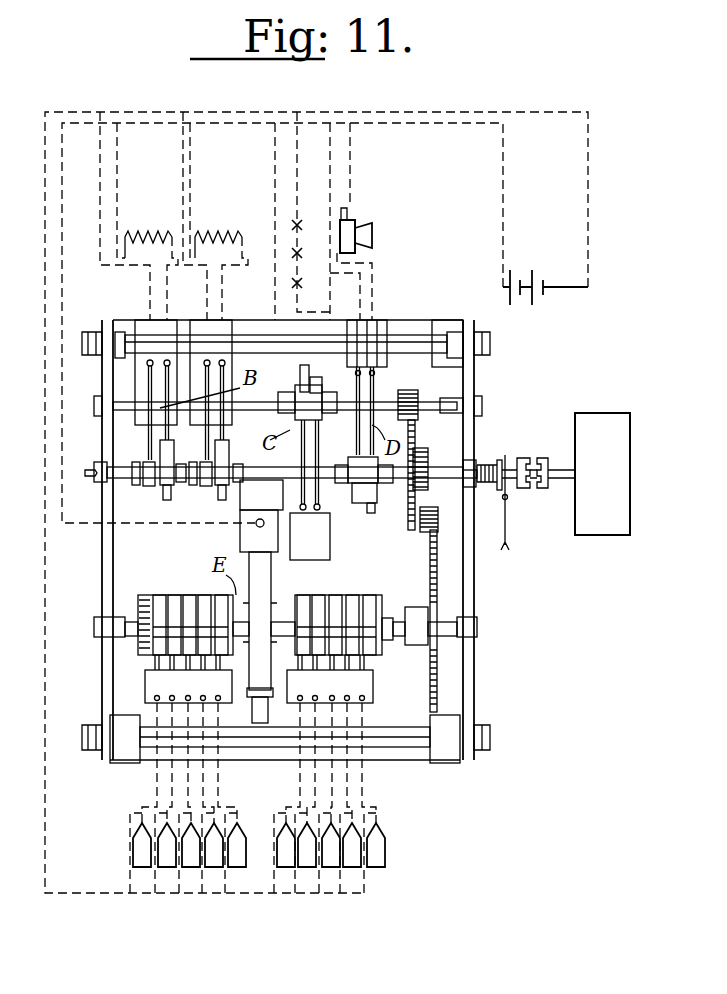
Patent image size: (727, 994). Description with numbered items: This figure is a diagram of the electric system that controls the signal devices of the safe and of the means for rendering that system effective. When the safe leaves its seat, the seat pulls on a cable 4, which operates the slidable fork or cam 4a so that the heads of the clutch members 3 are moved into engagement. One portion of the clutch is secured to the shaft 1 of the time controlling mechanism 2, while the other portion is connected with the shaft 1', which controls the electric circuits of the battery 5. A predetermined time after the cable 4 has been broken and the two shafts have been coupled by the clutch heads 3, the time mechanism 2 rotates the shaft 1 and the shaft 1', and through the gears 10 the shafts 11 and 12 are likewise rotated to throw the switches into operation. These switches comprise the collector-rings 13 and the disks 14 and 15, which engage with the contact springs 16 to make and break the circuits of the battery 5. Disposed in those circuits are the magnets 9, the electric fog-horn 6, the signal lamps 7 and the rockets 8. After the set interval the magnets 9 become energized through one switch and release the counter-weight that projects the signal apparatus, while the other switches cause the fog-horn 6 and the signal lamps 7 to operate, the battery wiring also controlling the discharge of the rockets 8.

The shaft 1 is at (561, 460).
The shaft 1' is at (458, 463).
The time controlling mechanism 2 is at (598, 418).
The clutch members 3 is at (540, 488).
The cable 4 is at (507, 540).
The slidable fork or cam 4a is at (510, 448).
The battery 5 is at (537, 300).
The electric fog-horn 6 is at (372, 235).
The signal lamps 7 is at (303, 248).
The rockets 8 is at (133, 848).
The magnets 9 is at (139, 232).
The gears 10 is at (418, 395).
The shaft 11 is at (463, 405).
The shaft 12 is at (442, 628).
The collector-rings 13 is at (148, 490).
The disks 14 is at (167, 497).
The disks 15 is at (300, 370).
The contact springs 16 is at (163, 432).